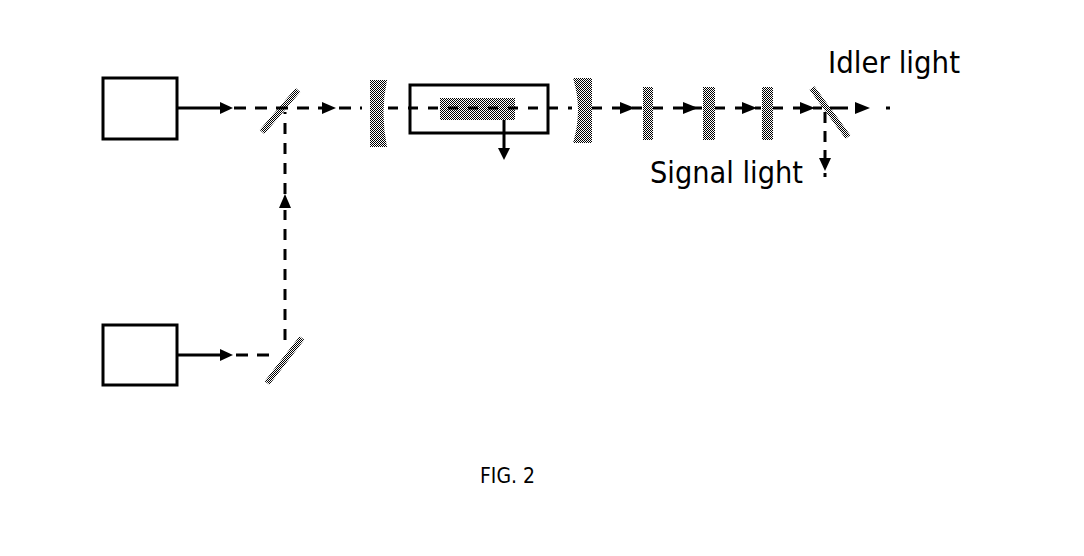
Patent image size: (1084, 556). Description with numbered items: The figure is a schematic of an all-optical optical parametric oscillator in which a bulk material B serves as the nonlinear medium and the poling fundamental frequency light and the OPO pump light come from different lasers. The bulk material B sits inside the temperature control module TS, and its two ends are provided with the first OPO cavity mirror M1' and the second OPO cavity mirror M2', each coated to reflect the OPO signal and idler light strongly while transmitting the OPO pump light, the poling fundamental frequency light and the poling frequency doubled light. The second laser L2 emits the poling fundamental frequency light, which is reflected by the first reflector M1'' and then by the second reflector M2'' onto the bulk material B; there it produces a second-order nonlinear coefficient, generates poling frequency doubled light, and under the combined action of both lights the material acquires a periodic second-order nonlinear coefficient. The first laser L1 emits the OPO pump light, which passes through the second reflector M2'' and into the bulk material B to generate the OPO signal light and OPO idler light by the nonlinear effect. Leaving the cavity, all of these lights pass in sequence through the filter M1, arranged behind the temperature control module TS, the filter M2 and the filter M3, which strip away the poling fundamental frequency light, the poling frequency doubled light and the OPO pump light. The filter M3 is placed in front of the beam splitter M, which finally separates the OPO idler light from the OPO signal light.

The first laser L1 is at (112, 108).
The second laser L2 is at (110, 355).
The second reflector M2'' is at (265, 93).
The first reflector M1'' is at (313, 371).
The first OPO cavity mirror M1' is at (387, 95).
The temperature control module TS is at (479, 88).
The bulk material B is at (510, 161).
The second OPO cavity mirror M2' is at (587, 93).
The filter M1 is at (648, 92).
The filter M2 is at (712, 92).
The filter M3 is at (776, 92).
The beam splitter M is at (846, 127).